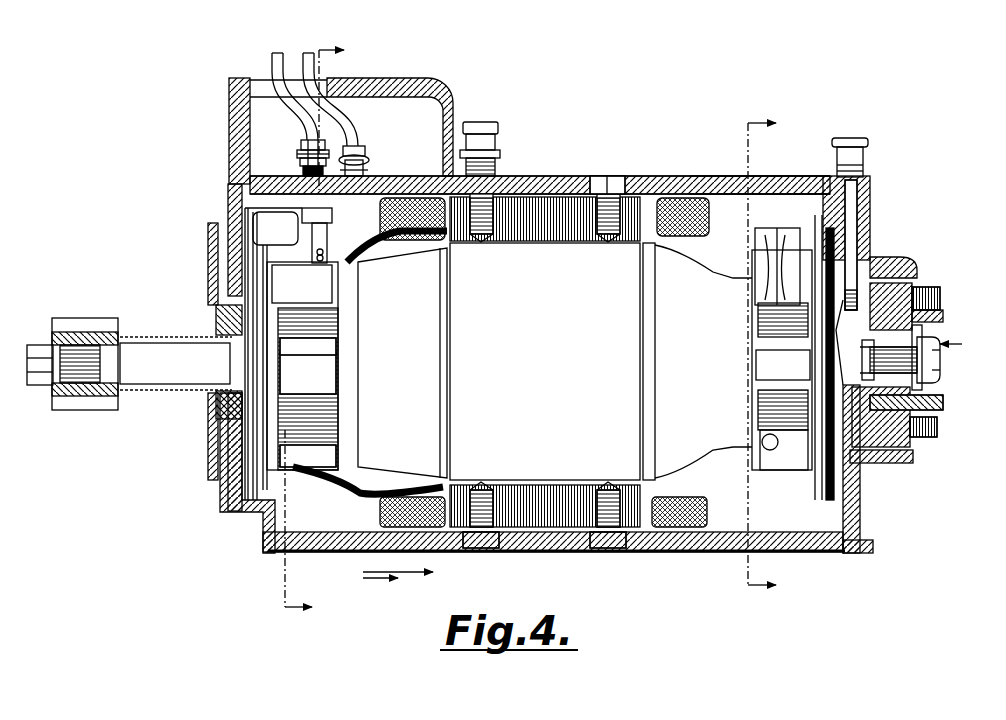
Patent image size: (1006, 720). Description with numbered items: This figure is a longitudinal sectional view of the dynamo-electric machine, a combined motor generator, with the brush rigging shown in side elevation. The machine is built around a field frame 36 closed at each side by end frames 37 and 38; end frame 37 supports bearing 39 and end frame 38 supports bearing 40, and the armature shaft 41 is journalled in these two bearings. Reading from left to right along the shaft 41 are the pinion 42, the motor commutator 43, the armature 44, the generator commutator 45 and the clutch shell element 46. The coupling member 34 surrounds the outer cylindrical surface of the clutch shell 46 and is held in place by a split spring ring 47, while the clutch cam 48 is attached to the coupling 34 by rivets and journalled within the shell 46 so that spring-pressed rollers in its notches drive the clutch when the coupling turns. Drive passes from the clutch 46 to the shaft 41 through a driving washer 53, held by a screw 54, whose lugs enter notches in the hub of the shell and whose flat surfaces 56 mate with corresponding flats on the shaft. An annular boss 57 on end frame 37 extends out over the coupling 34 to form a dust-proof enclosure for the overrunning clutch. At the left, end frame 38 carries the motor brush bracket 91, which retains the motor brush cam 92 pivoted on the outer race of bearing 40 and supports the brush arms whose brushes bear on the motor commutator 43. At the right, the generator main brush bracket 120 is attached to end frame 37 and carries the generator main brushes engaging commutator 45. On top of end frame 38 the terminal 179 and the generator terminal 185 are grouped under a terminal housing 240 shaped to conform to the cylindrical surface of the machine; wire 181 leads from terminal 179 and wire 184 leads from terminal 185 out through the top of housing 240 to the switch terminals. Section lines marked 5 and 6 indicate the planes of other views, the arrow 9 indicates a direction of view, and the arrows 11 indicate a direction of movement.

The section line 5- 5 is at (770, 356).
The section line 6- 6 is at (321, 328).
The direction arrow 9 is at (959, 344).
The direction arrows 11 is at (398, 587).
The coupling member 34 is at (925, 283).
The field frame 36 is at (530, 176).
The end frame 37 is at (720, 185).
The end frame 38 is at (236, 166).
The bearing 39 is at (866, 246).
The bearing 40 is at (228, 428).
The armature shaft 41 is at (140, 352).
The pinion 42 is at (95, 405).
The motor commutator 43 is at (330, 325).
The armature 44 is at (545, 450).
The generator commutator 45 is at (750, 406).
The clutch shell element 46 is at (885, 268).
The split spring ring 47 is at (886, 442).
The clutch cam 48 is at (938, 308).
The driving washer 53 is at (922, 335).
The screw 54 is at (940, 369).
The flat surfaces 56 is at (883, 360).
The annular boss 57 is at (910, 458).
The motor brush bracket 91 is at (278, 258).
The motor brush cam 92 is at (252, 263).
The generator main brush bracket 120 is at (822, 230).
The terminal 179 is at (362, 156).
The wire 181 is at (306, 53).
The wire 184 is at (270, 64).
The generator terminal 185 is at (300, 152).
The terminal housing 240 is at (383, 86).